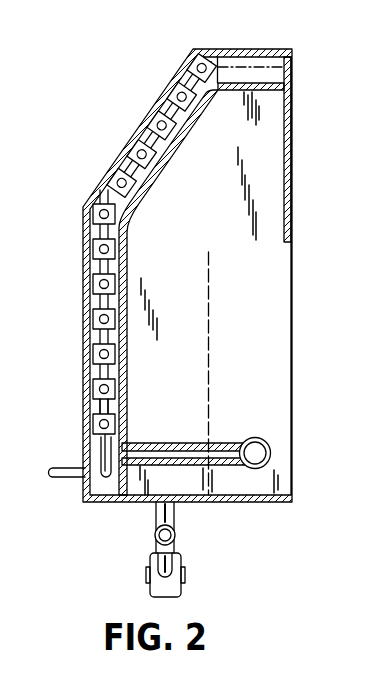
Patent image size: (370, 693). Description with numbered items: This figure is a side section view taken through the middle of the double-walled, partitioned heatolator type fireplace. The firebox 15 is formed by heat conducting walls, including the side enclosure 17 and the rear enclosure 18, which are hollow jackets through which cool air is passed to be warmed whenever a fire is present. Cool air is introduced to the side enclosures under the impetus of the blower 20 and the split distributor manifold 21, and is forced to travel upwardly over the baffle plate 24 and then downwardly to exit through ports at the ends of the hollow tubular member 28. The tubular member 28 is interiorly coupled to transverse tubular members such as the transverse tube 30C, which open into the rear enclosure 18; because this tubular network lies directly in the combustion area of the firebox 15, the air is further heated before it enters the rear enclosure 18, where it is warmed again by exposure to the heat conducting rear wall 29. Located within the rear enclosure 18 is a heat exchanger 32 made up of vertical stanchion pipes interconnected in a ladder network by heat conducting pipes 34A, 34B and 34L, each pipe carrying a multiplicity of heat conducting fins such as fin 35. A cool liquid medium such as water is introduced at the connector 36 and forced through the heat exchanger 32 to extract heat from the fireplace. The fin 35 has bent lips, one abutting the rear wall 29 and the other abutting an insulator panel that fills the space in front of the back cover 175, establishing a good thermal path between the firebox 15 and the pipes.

The firebox 15 is at (258, 401).
The side enclosure 17 is at (282, 362).
The rear enclosure 18 is at (123, 148).
The blower 20 is at (194, 580).
The split distributor manifold 21 is at (177, 533).
The baffle plate 24 is at (207, 272).
The hollow tubular member 28 is at (257, 455).
The rear wall 29 is at (145, 184).
The transverse tubular member 30C is at (180, 442).
The heat exchanger 32 is at (106, 196).
The heat conducting pipe 34A is at (102, 427).
The heat conducting pipe 34B is at (102, 390).
The heat conducting pipe 34L is at (196, 49).
The heat conducting fin 35 is at (97, 399).
The connector 36 is at (67, 478).
The back cover 175 is at (85, 323).